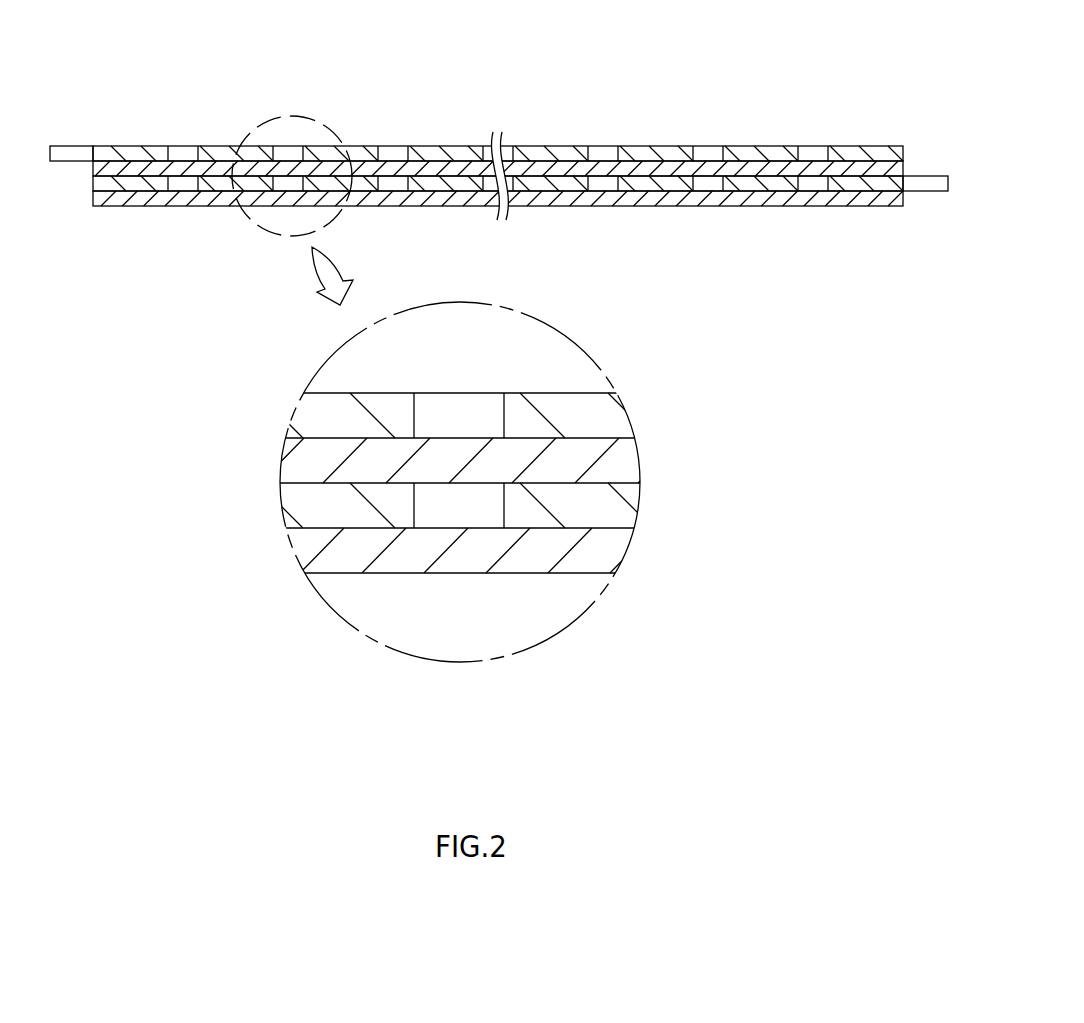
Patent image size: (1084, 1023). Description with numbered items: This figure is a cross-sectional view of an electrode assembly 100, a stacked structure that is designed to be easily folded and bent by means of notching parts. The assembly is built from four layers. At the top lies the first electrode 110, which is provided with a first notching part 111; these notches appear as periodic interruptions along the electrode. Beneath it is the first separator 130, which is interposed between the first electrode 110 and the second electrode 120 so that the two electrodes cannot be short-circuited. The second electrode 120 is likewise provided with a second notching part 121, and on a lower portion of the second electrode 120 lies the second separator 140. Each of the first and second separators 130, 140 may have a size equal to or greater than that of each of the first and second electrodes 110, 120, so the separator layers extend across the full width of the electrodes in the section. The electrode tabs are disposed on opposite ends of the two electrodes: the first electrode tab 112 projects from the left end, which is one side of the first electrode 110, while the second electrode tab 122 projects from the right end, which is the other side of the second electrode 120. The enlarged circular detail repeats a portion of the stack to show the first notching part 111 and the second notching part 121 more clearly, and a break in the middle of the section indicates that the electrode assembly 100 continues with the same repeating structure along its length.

The electrode assembly 100 is at (431, 93).
The first electrode 110 is at (630, 155).
The first notching part 111 is at (176, 146).
The first electrode tab 112 is at (70, 146).
The second electrode 120 is at (735, 178).
The second notching part 121 is at (177, 191).
The second electrode tab 122 is at (925, 176).
The first separator 130 is at (675, 163).
The second separator 140 is at (788, 197).